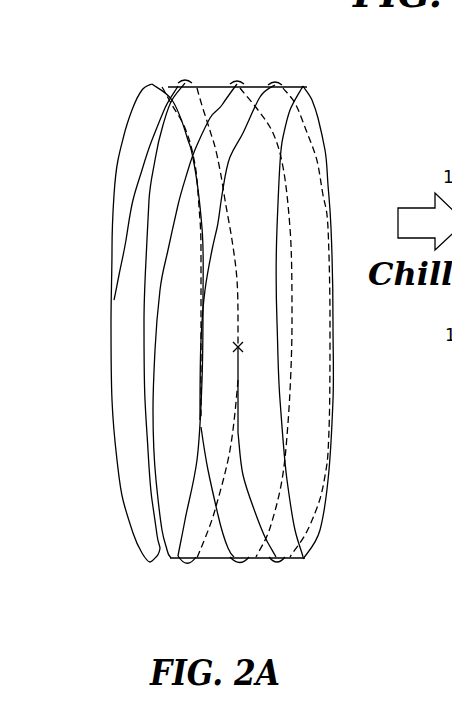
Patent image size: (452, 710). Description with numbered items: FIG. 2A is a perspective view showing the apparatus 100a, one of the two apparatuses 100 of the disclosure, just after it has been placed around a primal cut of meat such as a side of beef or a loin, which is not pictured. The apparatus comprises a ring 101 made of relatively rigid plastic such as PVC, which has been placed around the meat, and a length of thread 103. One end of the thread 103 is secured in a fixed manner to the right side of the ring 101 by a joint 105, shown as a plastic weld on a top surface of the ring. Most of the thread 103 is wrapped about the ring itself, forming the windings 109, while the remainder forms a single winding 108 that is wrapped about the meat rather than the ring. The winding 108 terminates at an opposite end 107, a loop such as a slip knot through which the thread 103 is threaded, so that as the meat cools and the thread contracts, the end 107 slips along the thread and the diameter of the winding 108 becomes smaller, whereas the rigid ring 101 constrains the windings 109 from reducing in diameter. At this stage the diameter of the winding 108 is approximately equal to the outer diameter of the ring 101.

The apparatus 100 is at (104, 544).
The apparatus 100a is at (252, 50).
The ring 101 is at (322, 495).
The thread 103 is at (188, 560).
The joint 105 is at (242, 347).
The opposite end 107 is at (114, 298).
The winding 108 is at (126, 130).
The windings 109 is at (238, 457).